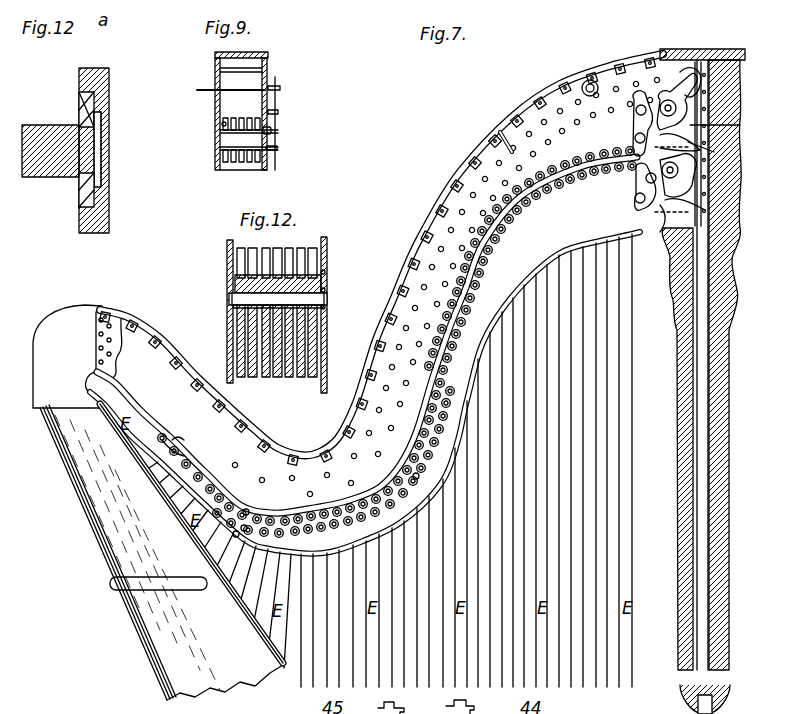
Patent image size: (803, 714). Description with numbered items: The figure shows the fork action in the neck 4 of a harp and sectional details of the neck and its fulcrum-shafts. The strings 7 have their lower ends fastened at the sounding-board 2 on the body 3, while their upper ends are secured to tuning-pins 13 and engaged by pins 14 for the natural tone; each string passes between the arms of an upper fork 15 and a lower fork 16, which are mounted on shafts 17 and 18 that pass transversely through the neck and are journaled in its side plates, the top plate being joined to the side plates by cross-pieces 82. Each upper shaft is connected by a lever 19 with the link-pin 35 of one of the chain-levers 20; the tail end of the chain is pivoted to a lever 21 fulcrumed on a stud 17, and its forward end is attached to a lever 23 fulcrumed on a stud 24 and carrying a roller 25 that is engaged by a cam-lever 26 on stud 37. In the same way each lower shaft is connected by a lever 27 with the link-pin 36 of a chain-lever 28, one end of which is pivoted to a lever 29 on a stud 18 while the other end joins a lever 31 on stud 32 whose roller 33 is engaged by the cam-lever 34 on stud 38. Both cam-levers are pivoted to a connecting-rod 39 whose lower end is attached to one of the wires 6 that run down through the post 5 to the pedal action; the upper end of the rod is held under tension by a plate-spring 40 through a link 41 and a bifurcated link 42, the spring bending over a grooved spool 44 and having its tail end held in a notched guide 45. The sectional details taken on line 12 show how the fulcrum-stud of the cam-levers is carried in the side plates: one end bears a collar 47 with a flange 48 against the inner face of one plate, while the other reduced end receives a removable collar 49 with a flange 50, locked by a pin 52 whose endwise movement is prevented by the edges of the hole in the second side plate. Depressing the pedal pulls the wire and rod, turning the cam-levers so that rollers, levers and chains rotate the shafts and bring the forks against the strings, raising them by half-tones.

In FIG. 7, the sounding-board 2 is at (235, 612).
In FIG. 7, the body 3 is at (140, 538).
In FIG. 12A, the neck 4 is at (108, 75).
In FIG. 9, the neck 4 is at (268, 78).
In FIG. 12, the neck 4 is at (226, 253).
In FIG. 7, the neck 4 is at (400, 302).
In FIG. 7, the post 5 is at (732, 562).
In FIG. 7, the wires 6 is at (720, 492).
In FIG. 9, the strings 7 is at (279, 104).
In FIG. 7, the strings 7 is at (600, 440).
In FIG. 7, the section line 12 is at (672, 177).
In FIG. 9, the tuning-pins 13 is at (280, 90).
In FIG. 9, the pins 14 is at (280, 114).
In FIG. 9, the upper set of forks 15 is at (279, 131).
In FIG. 9, the lower set of forks 16 is at (279, 150).
In FIG. 9, the shafts 17 is at (233, 134).
In FIG. 7, the shafts 17 is at (450, 346).
In FIG. 9, the shafts 18 is at (232, 150).
In FIG. 7, the shafts 18 is at (462, 338).
In FIG. 9, the lever 19 is at (222, 120).
In FIG. 7, the lever 19 is at (246, 524).
In FIG. 9, the chain-levers 20 is at (236, 118).
In FIG. 7, the lever 21 is at (176, 436).
In FIG. 7, the lever 23 is at (634, 112).
In FIG. 7, the stud 24 is at (635, 136).
In FIG. 7, the roller 25 is at (652, 102).
In FIG. 7, the cam-lever 26 is at (716, 150).
In FIG. 9, the lever 27 is at (233, 163).
In FIG. 7, the lever 27 is at (415, 475).
In FIG. 9, the chain-levers 28 is at (242, 160).
In FIG. 7, the chain-levers 28 is at (488, 236).
In FIG. 7, the lever 29 is at (165, 446).
In FIG. 7, the lever 31 is at (660, 232).
In FIG. 7, the stud 32 is at (636, 196).
In FIG. 7, the roller 33 is at (702, 210).
In FIG. 12, the cam-lever 34 is at (256, 340).
In FIG. 7, the cam-lever 34 is at (676, 188).
In FIG. 7, the link-pin 35 is at (246, 508).
In FIG. 7, the link-pin 36 is at (236, 536).
In FIG. 7, the fulcrum-stud 37 is at (666, 104).
In FIG. 12A, the fulcrum-stud 38 is at (52, 168).
In FIG. 12, the fulcrum-stud 38 is at (250, 290).
In FIG. 7, the fulcrum-stud 38 is at (700, 146).
In FIG. 7, the connecting-rod 39 is at (718, 130).
In FIG. 7, the spring 40 is at (557, 92).
In FIG. 7, the link 41 is at (698, 130).
In FIG. 7, the bifurcated link 42 is at (688, 70).
In FIG. 7, the spool 44 is at (590, 80).
In FIG. 7, the guide 45 is at (504, 130).
In FIG. 12, the collar 47 is at (228, 300).
In FIG. 12, the flange 48 is at (233, 316).
In FIG. 12A, the collar 49 is at (103, 174).
In FIG. 12, the collar 49 is at (326, 309).
In FIG. 12A, the flange 50 is at (80, 108).
In FIG. 12, the flange 50 is at (325, 272).
In FIG. 12A, the pin 52 is at (101, 142).
In FIG. 12, the pin 52 is at (325, 291).
In FIG. 9, the cross-pieces 82 is at (236, 62).
In FIG. 7, the cross-pieces 82 is at (455, 186).